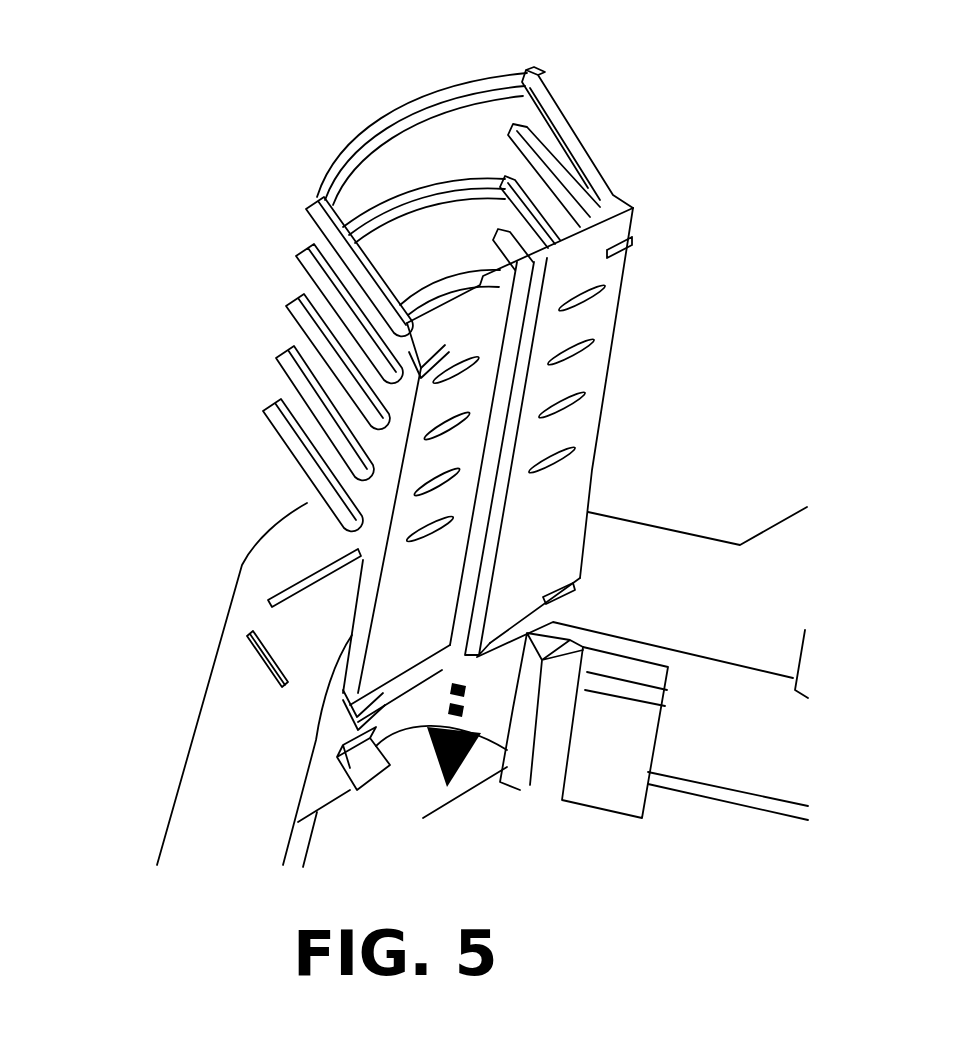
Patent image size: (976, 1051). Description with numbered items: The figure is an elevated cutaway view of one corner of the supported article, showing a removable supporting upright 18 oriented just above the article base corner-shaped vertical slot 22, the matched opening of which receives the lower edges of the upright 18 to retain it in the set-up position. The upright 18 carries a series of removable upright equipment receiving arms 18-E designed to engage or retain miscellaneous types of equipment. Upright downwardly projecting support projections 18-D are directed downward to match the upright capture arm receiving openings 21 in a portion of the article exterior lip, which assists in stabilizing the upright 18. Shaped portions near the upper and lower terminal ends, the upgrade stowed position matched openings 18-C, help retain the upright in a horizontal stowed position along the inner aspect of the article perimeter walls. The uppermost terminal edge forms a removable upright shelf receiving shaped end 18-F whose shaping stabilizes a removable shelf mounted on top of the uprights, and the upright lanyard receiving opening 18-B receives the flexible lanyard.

The removable supporting upright 18 is at (247, 311).
The upright lanyard receiving opening 18-B is at (378, 103).
The upgrade stowed position matched openings 18-C is at (640, 237).
The upright downwardly projecting support projections 18-D is at (293, 497).
The removable upright equipment receiving arms 18-E is at (297, 241).
The removable upright shelf receiving shaped end 18-F is at (623, 183).
The upright capture arm receiving openings 21 is at (260, 573).
The article base corner-shaped vertical slot 22 is at (503, 663).